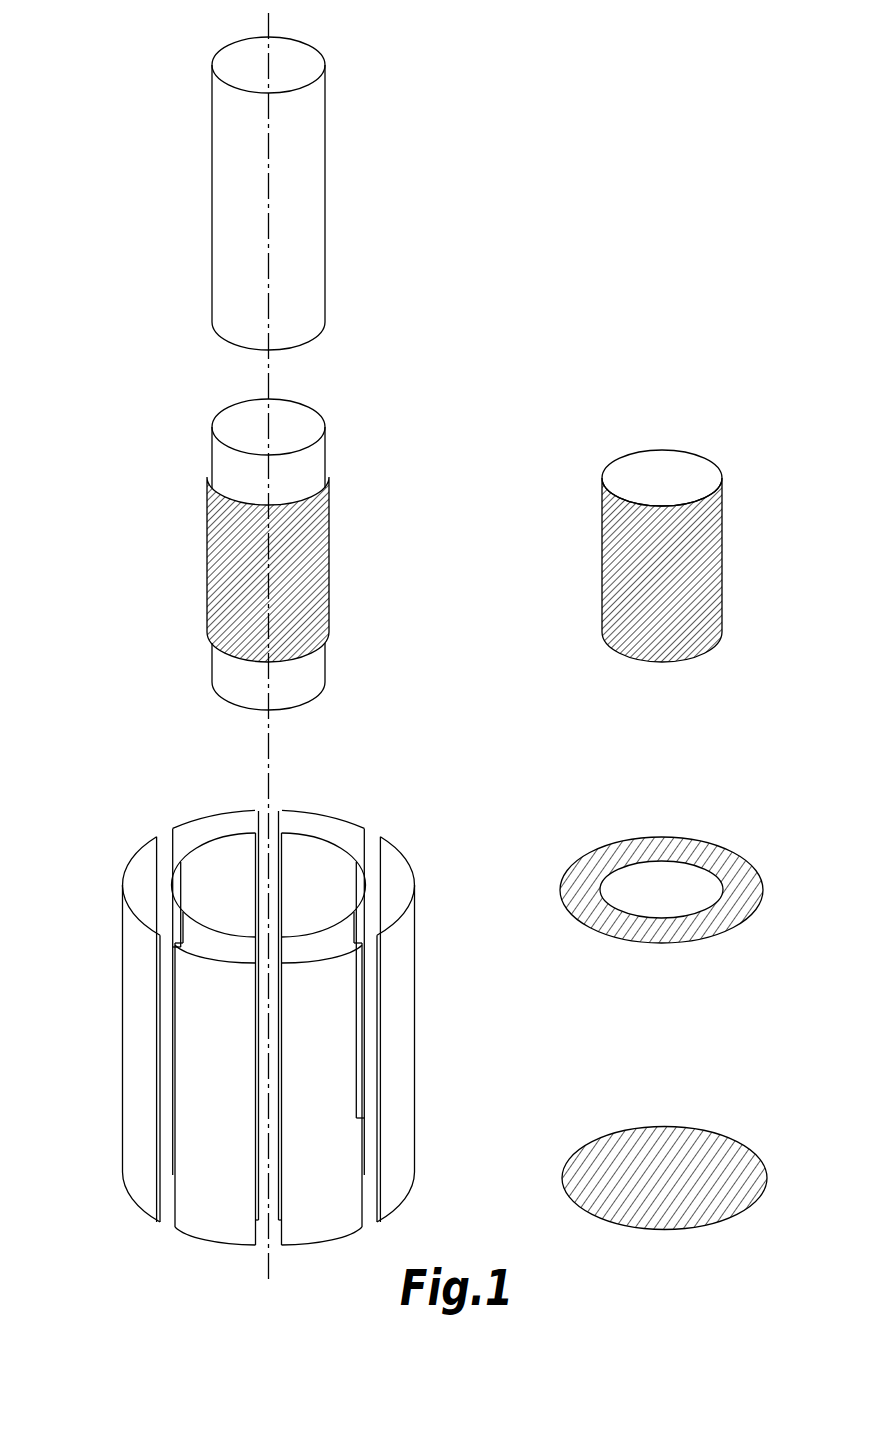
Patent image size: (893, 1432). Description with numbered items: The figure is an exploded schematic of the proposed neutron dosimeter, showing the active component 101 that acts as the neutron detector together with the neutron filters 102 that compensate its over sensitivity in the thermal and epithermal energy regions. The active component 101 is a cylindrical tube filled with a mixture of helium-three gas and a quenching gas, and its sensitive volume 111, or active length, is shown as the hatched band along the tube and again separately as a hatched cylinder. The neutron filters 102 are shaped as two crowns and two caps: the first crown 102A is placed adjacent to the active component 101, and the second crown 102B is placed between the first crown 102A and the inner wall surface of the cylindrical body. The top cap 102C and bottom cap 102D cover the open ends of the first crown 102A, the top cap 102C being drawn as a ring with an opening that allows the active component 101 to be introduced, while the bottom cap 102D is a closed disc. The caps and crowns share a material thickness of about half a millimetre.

The active component 101 is at (195, 83).
The sensitive volume 111 is at (200, 475).
The neutron filters 102 is at (128, 842).
The first crown 102A is at (318, 812).
The second crown 102B is at (353, 824).
The top cap 102C is at (593, 832).
The bottom cap 102D is at (622, 1112).